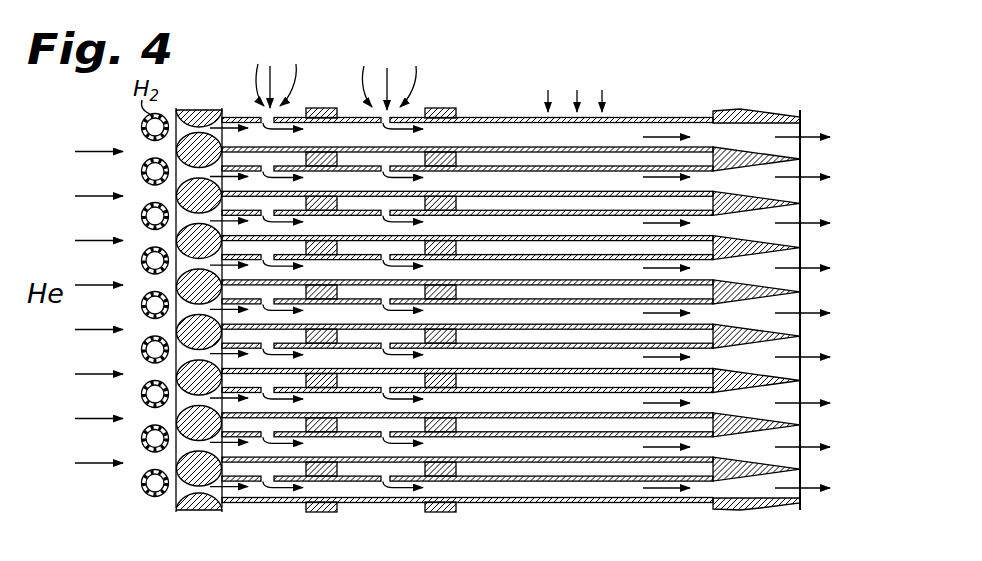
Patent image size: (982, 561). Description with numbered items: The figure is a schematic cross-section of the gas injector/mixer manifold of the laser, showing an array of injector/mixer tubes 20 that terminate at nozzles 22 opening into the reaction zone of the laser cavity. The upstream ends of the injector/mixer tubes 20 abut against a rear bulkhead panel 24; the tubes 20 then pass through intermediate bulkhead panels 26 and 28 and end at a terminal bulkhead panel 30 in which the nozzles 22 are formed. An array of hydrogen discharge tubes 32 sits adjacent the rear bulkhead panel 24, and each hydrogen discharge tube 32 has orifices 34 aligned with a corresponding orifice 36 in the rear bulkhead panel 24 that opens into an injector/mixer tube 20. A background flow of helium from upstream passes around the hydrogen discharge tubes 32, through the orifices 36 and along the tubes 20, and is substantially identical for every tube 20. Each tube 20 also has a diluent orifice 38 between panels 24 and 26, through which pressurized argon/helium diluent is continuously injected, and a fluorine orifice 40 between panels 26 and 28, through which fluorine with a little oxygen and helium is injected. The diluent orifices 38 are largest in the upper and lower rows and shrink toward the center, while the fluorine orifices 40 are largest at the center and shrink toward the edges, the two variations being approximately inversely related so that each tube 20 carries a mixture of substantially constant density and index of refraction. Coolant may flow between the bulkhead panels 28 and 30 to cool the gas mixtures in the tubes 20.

The injector/mixer tubes 20 is at (640, 118).
The nozzles 22 is at (815, 127).
The rear bulkhead panel 24 is at (194, 112).
The intermediate bulkhead panel 26 is at (316, 109).
The intermediate bulkhead panel 28 is at (444, 109).
The terminal bulkhead panel 30 is at (722, 112).
The hydrogen discharge tubes 32 is at (157, 128).
The orifices 34 is at (176, 112).
The orifice 36 is at (232, 115).
The diluent orifice 38 is at (285, 264).
The fluorine orifice 40 is at (403, 264).